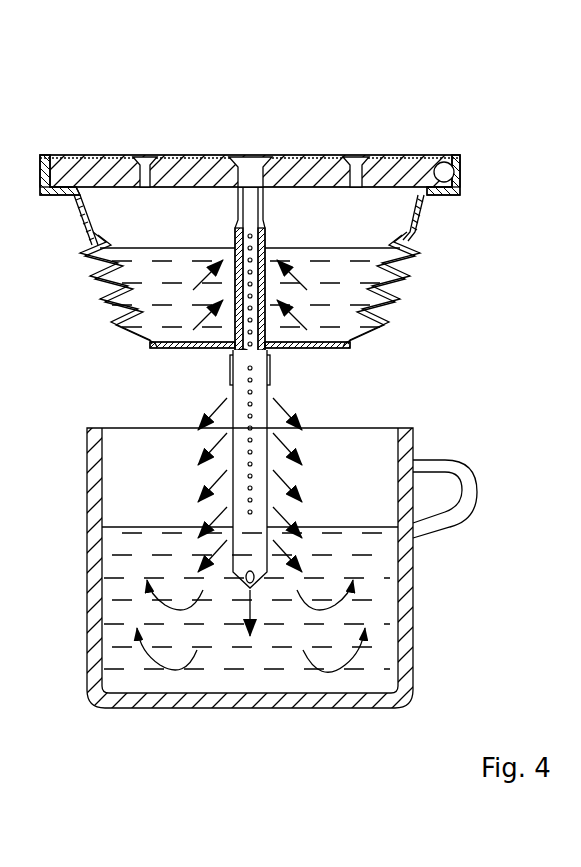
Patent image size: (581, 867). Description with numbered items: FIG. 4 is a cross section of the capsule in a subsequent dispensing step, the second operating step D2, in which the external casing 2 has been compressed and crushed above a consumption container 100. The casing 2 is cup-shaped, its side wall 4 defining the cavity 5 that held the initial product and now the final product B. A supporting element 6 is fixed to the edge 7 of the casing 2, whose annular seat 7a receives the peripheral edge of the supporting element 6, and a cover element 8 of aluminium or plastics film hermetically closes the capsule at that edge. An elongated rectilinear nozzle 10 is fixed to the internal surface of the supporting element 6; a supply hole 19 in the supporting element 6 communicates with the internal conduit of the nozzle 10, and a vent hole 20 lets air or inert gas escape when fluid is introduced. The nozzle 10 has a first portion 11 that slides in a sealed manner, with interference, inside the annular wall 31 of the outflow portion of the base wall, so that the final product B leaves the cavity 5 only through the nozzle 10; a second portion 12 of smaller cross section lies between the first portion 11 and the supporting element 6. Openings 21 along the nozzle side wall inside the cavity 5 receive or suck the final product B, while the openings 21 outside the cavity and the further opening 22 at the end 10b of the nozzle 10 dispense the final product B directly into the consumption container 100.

The external casing 2 is at (428, 300).
The side wall 4 is at (400, 245).
The cavity 5 is at (347, 236).
The supporting element 6 is at (405, 172).
The edge 7 is at (460, 190).
The annular seat 7a is at (462, 164).
The cover element 8 is at (68, 155).
The nozzle 10 is at (240, 228).
The end of the nozzle 10b is at (245, 553).
The first portion 11 is at (200, 387).
The second portion 12 is at (268, 205).
The supply hole 19 is at (257, 160).
The vent hole 20 is at (147, 158).
The openings 21 is at (251, 386).
The further opening 22 is at (253, 583).
The annular wall 31 is at (230, 367).
The consumption container 100 is at (132, 695).
The final product B is at (200, 494).
The second operating step D2 is at (432, 383).